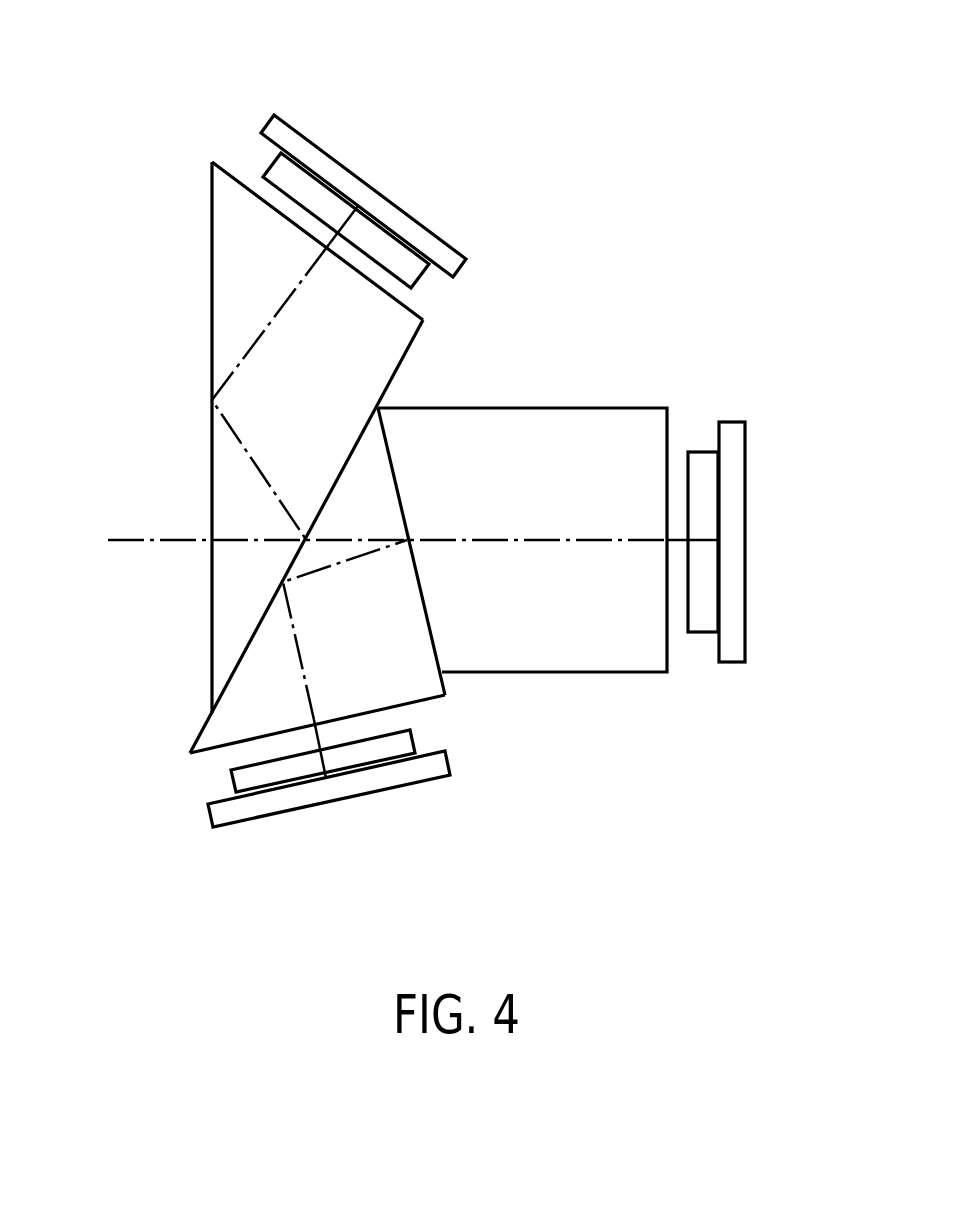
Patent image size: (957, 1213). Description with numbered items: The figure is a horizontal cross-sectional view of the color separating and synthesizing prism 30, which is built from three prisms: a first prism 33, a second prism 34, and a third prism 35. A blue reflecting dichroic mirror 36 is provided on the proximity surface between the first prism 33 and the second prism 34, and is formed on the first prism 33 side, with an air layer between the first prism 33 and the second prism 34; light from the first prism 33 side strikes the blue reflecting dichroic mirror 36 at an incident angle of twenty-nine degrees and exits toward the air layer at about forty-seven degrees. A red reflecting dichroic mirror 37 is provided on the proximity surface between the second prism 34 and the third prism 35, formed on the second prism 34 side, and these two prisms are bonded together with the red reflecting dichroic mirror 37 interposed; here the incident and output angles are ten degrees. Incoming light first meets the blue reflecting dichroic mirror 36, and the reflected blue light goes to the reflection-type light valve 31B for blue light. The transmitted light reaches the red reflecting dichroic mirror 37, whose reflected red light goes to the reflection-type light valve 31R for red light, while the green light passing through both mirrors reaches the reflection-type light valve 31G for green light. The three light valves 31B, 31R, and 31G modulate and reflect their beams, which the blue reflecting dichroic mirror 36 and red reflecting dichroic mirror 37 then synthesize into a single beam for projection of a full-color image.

The color separating and synthesizing prism 30 is at (152, 121).
The reflection-type light valve for blue light 31B is at (333, 150).
The reflection-type light valve for green light 31G is at (745, 605).
The reflection-type light valve for red light 31R is at (303, 810).
The first prism 33 is at (228, 630).
The second prism 34 is at (445, 695).
The third prism 35 is at (622, 437).
The blue reflecting dichroic mirror 36 is at (285, 582).
The red reflecting dichroic mirror 37 is at (390, 463).